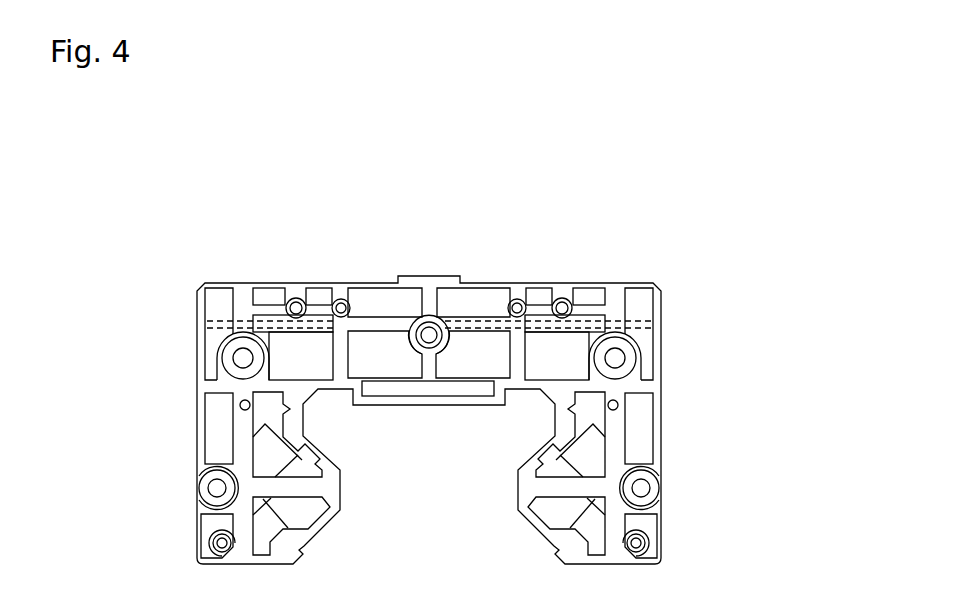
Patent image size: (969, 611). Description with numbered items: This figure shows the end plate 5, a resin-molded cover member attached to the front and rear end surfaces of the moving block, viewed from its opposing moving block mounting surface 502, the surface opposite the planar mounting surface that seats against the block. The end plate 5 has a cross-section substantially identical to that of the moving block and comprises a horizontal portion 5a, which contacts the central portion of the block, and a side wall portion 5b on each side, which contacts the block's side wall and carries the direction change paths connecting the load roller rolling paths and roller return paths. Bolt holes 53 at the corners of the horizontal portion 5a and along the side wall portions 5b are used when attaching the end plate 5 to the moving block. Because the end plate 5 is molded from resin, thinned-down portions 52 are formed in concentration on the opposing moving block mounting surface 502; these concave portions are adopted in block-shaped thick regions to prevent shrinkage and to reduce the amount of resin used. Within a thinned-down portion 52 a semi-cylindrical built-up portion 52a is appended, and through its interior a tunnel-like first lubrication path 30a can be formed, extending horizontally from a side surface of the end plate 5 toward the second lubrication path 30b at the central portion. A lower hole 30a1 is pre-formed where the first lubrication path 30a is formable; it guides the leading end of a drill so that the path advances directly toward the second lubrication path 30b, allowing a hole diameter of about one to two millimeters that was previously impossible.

The end plate 5 is at (657, 222).
The horizontal portion 5a is at (342, 287).
The side wall portion 5b is at (200, 428).
The first lubrication path 30a is at (602, 287).
The lower hole 30a1 is at (274, 287).
The second lubrication path 30b is at (429, 330).
The thinned-down portion 52 is at (478, 307).
The built-up portion 52a is at (478, 330).
The opposing moving block mounting surface 502 is at (343, 362).
The bolt hole 53 is at (240, 360).